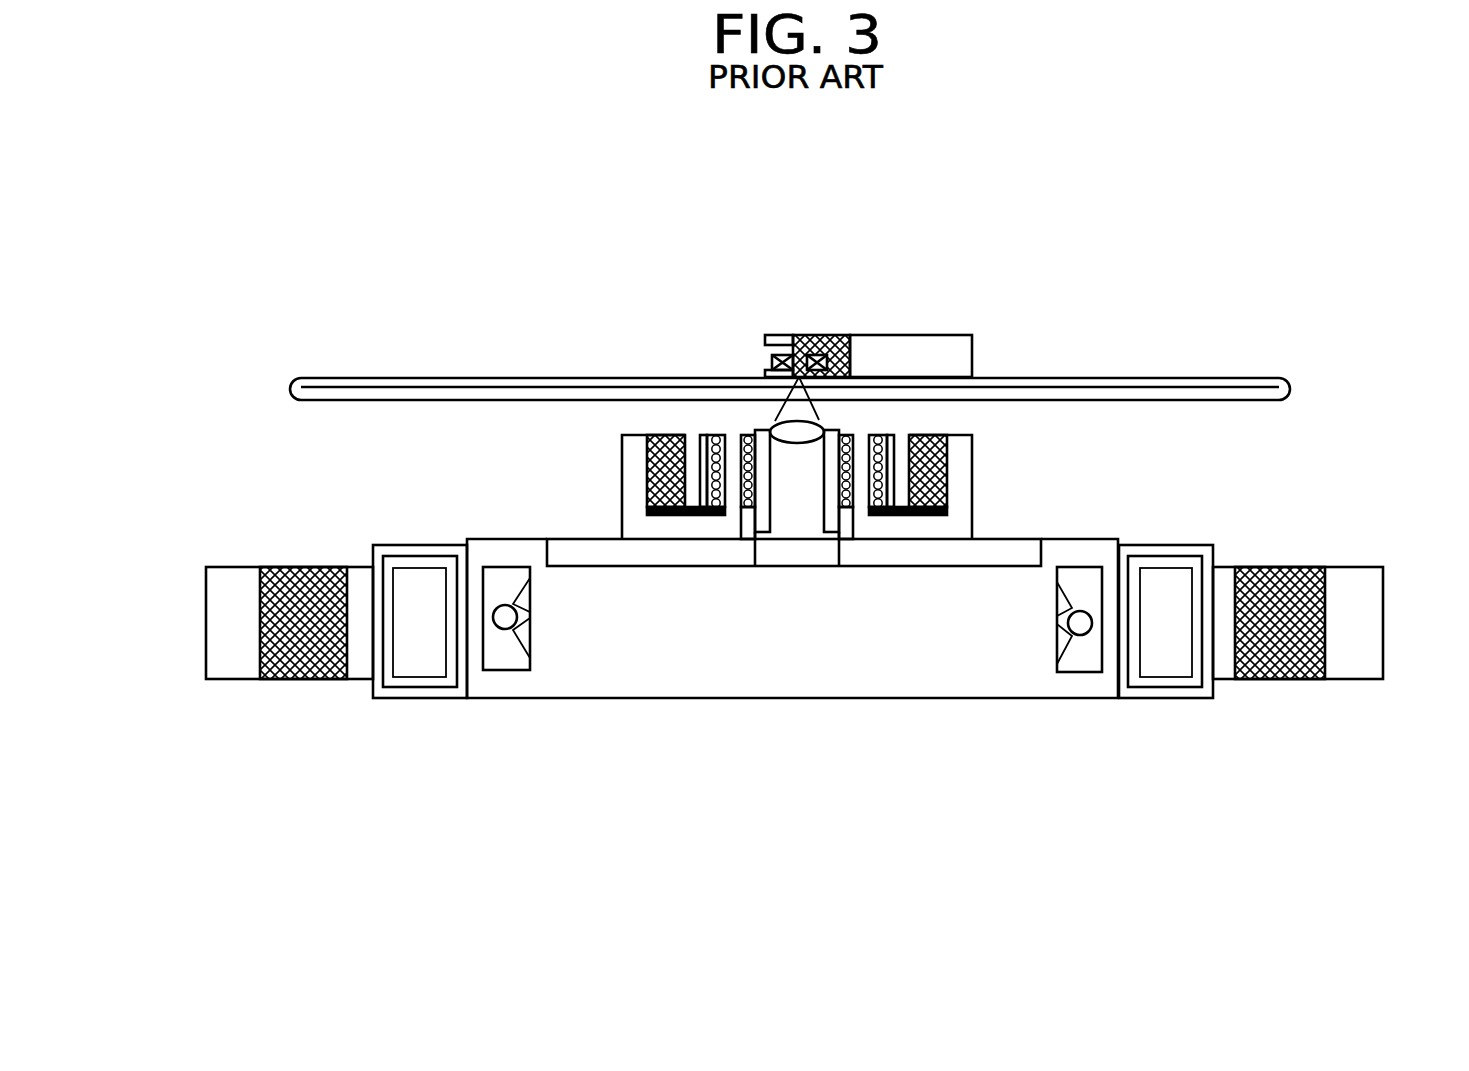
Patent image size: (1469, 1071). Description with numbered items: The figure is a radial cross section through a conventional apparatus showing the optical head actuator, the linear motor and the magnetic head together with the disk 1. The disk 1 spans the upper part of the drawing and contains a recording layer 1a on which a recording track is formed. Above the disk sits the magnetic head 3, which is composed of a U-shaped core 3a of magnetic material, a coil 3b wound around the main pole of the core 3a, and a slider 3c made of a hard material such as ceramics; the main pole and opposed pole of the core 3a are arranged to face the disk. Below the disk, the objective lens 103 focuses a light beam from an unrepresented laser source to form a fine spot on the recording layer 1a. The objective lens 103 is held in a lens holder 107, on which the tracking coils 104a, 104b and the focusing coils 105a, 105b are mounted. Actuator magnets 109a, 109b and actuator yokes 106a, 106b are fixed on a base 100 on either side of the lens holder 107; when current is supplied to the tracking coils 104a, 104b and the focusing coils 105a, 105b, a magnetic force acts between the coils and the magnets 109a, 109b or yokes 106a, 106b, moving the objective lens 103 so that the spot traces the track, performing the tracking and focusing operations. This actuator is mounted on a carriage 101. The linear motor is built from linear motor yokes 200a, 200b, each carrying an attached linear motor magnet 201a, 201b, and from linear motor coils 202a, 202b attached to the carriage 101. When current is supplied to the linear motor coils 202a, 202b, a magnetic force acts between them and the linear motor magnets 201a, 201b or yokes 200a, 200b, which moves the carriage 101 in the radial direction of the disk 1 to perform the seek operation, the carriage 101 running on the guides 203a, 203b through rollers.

The disk 1 is at (343, 378).
The recording layer 1a is at (436, 387).
The magnetic head 3 is at (702, 278).
The U-shaped core 3a is at (826, 335).
The coil 3b is at (768, 362).
The slider 3c is at (915, 345).
The base 100 is at (643, 553).
The carriage 101 is at (762, 685).
The objective lens 103 is at (772, 418).
The tracking coil 104a is at (703, 440).
The tracking coil 104b is at (893, 460).
The focusing coil 105a is at (718, 433).
The focusing coil 105b is at (877, 433).
The actuator yoke 106a is at (628, 522).
The actuator yoke 106b is at (956, 527).
The lens holder 107 is at (770, 517).
The actuator magnet 109a is at (647, 470).
The actuator magnet 109b is at (942, 478).
The linear motor yoke 200a is at (225, 682).
The linear motor yoke 200b is at (1367, 665).
The linear motor magnet 201a is at (304, 672).
The linear motor magnet 201b is at (1283, 672).
The linear motor coil 202a is at (413, 699).
The linear motor coil 202b is at (1163, 699).
The guide 203a is at (502, 633).
The guide 203b is at (1085, 635).